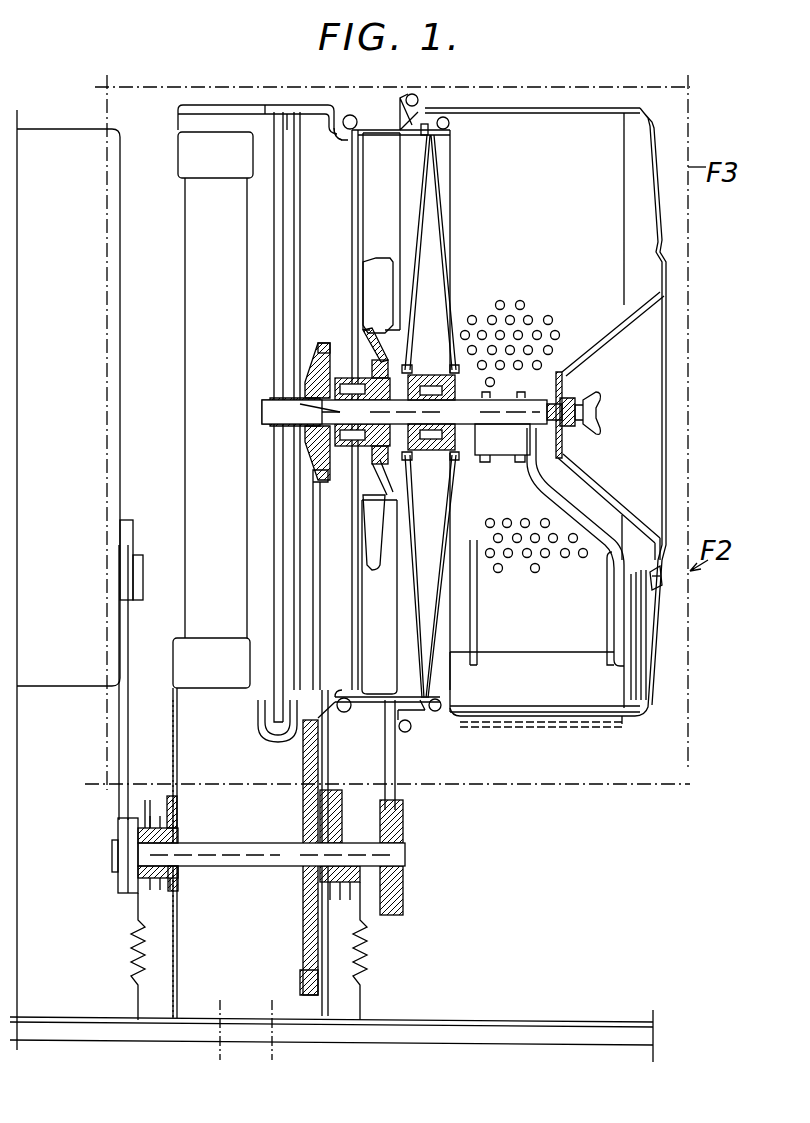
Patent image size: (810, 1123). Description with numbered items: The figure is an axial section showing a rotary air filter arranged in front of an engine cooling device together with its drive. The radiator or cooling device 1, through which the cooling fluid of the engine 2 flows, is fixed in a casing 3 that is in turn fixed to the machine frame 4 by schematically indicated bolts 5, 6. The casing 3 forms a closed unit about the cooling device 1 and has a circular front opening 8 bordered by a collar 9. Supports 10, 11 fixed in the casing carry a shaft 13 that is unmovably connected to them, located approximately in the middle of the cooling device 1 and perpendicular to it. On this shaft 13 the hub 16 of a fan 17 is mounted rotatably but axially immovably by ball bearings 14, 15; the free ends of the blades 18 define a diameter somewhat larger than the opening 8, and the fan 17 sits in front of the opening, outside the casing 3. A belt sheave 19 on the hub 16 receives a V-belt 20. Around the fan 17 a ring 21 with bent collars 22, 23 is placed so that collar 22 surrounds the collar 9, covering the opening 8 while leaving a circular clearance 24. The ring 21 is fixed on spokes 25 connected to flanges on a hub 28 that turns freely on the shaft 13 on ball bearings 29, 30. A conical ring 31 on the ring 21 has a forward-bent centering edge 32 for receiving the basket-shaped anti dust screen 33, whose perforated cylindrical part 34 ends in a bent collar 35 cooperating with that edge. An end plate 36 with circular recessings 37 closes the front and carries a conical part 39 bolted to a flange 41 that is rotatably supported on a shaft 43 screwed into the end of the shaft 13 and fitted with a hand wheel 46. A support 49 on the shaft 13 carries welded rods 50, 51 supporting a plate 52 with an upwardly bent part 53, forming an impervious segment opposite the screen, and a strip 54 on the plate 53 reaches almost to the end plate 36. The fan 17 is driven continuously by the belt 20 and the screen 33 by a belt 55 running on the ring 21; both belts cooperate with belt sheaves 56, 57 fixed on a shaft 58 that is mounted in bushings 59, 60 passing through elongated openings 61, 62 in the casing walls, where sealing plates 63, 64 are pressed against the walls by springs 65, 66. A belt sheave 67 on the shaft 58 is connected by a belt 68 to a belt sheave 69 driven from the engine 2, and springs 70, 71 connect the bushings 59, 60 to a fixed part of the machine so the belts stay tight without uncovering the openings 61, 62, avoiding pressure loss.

The cooling device 1 is at (177, 173).
The engine 2 is at (58, 130).
The casing 3 is at (232, 105).
The machine frame 4 is at (525, 1030).
The bolt 5 is at (220, 1050).
The bolt 6 is at (272, 1052).
The circular opening 8 is at (350, 192).
The collar 9 is at (334, 138).
The support 10 is at (270, 105).
The support 11 is at (274, 618).
The shaft 13 is at (272, 404).
The ball bearing 14 is at (340, 390).
The ball bearing 15 is at (300, 404).
The hub 16 is at (318, 390).
The fan 17 is at (357, 280).
The blades 18 is at (385, 178).
The belt sheave 19 is at (318, 470).
The V-belt 20 is at (313, 492).
The ring 21 is at (365, 128).
The bent collar 22 is at (347, 115).
The bent collar 23 is at (490, 108).
The circular clearance 24 is at (338, 712).
The spokes 25 is at (430, 233).
The hub 28 is at (430, 375).
The ball bearing 29 is at (412, 448).
The ball bearing 30 is at (460, 450).
The conical ring 31 is at (447, 117).
The centering edge 32 is at (425, 84).
The anti dust screen 33 is at (604, 102).
The cylindrical part 34 is at (612, 728).
The bent collar 35 is at (412, 730).
The end plate 36 is at (652, 623).
The circular recessing 37 is at (660, 580).
The conical part 39 is at (625, 328).
The flange 41 is at (567, 450).
The shaft 43 is at (568, 410).
The hand wheel 46 is at (600, 412).
The support 49 is at (498, 455).
The rod 50 is at (478, 630).
The rod 51 is at (612, 604).
The plate 52 is at (562, 716).
The bent part 53 is at (644, 647).
The strip 54 is at (636, 668).
The belt 55 is at (395, 760).
The belt sheave 56 is at (303, 932).
The belt sheave 57 is at (403, 882).
The shaft 58 is at (405, 848).
The bushing 59 is at (320, 876).
The bushing 60 is at (180, 875).
The elongated opening 61 is at (340, 810).
The elongated opening 62 is at (178, 890).
The sealing plate 63 is at (320, 808).
The sealing plate 64 is at (178, 815).
The spring 65 is at (403, 815).
The spring 66 is at (148, 822).
The belt sheave 67 is at (118, 837).
The belt 68 is at (128, 736).
The belt sheave 69 is at (135, 528).
The spring 70 is at (366, 960).
The spring 71 is at (138, 946).